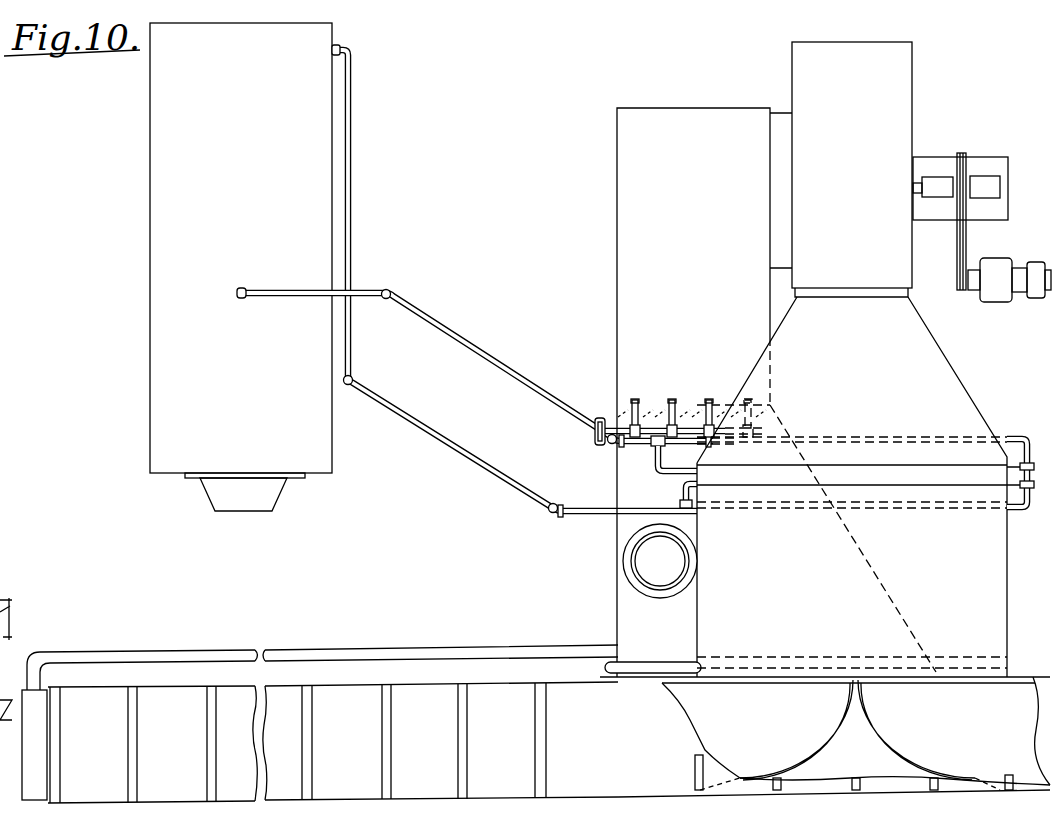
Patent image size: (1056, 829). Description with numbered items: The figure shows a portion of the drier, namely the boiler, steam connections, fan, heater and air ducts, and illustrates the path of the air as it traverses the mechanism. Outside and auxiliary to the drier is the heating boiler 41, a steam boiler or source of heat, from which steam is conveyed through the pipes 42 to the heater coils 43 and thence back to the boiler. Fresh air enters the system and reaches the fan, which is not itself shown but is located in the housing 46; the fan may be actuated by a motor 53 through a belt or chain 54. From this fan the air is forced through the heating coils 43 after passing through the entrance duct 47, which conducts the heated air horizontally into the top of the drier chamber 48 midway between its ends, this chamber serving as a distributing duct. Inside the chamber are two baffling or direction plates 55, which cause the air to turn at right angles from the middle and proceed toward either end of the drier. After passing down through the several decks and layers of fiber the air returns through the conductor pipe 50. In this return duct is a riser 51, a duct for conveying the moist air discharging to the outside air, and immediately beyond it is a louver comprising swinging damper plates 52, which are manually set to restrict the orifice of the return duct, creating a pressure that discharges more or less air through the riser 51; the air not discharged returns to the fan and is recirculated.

The heating boiler 41 is at (162, 390).
The pipes 42 is at (572, 382).
The heater coils 43 is at (1034, 490).
The housing 46 is at (905, 72).
The entrance duct 47 is at (942, 386).
The drier chamber 48 is at (834, 737).
The conductor pipe 50 is at (633, 626).
The riser 51 is at (637, 578).
The swinging damper plates 52 is at (702, 400).
The motor 53 is at (1000, 258).
The belt or chain 54 is at (963, 156).
The baffling or direction plates 55 is at (818, 722).